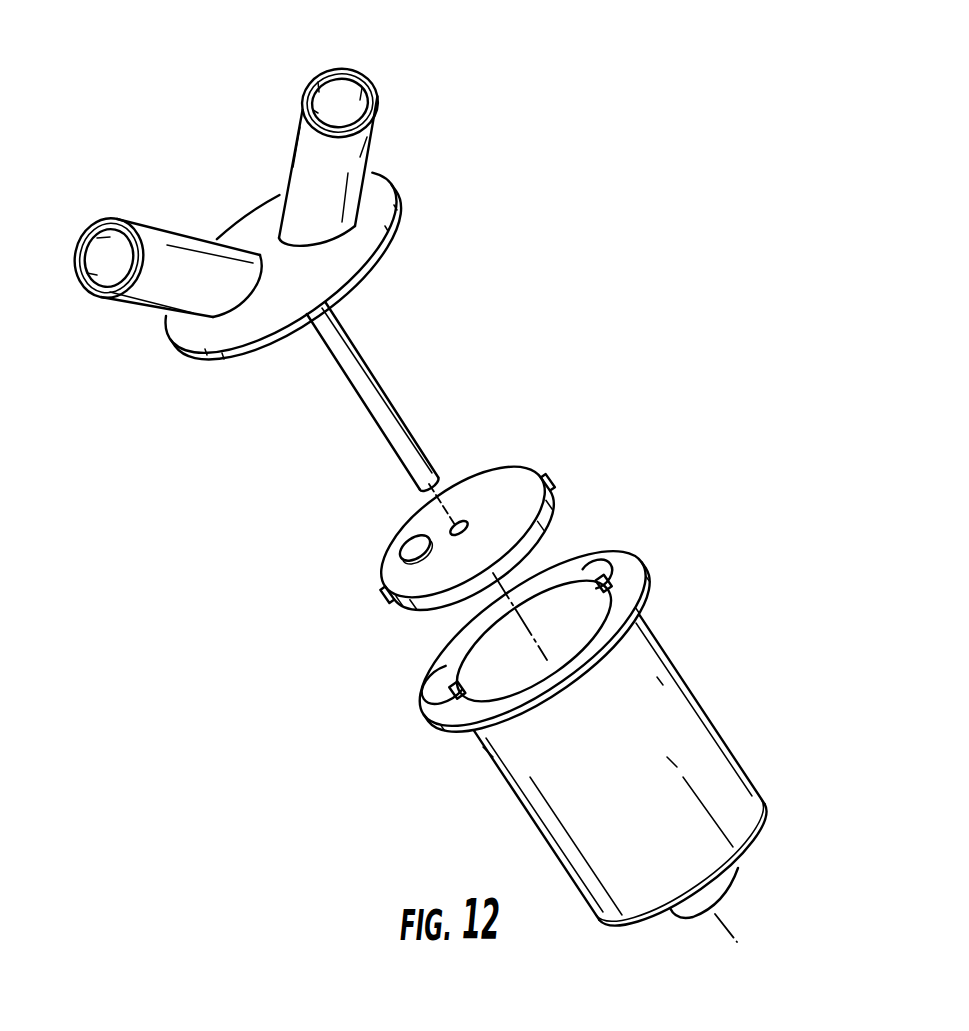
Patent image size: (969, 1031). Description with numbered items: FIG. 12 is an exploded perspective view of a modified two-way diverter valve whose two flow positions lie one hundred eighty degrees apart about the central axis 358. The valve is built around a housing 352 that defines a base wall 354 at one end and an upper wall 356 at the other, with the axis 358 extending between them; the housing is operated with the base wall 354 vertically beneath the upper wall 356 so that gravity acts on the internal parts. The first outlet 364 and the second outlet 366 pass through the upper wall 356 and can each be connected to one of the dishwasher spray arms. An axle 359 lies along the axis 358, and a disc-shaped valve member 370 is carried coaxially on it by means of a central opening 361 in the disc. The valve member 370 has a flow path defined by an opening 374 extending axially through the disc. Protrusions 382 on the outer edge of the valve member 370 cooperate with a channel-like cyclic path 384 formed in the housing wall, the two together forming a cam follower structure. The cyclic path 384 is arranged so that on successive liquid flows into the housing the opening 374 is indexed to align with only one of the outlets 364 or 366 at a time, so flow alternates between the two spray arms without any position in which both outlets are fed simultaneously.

The housing body 352 is at (707, 738).
The housing bottom wall 354 is at (760, 838).
The cap 356 is at (372, 193).
The axis 358 is at (724, 920).
The shaft 359 is at (378, 388).
The shaft aperture 361 is at (450, 528).
The outlet 364 is at (342, 70).
The outlet 366 is at (112, 222).
The seal disc 370 is at (478, 475).
The opening 374 is at (400, 547).
The tab 382 is at (541, 477).
The cyclic path 384 is at (585, 562).